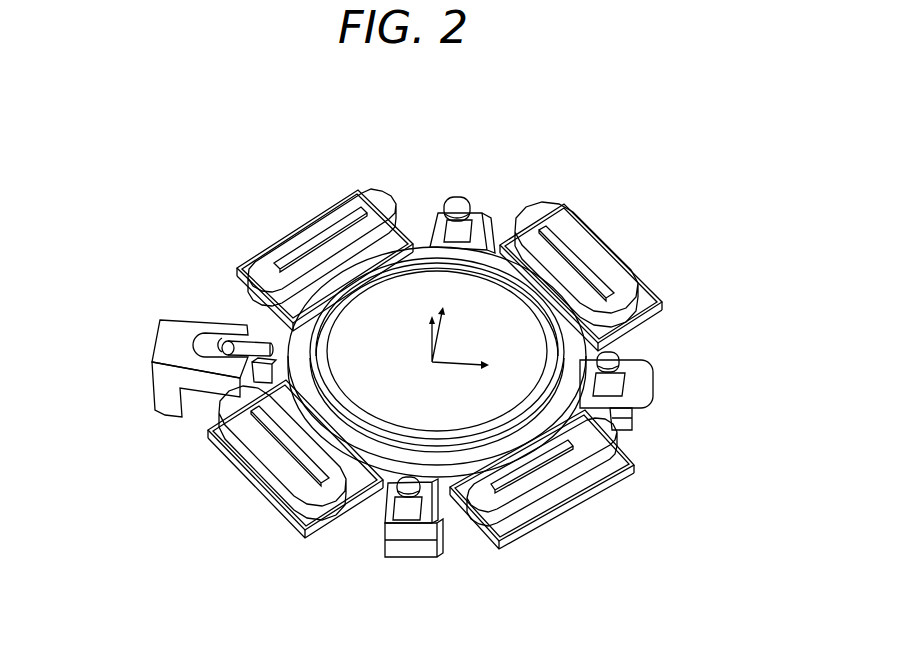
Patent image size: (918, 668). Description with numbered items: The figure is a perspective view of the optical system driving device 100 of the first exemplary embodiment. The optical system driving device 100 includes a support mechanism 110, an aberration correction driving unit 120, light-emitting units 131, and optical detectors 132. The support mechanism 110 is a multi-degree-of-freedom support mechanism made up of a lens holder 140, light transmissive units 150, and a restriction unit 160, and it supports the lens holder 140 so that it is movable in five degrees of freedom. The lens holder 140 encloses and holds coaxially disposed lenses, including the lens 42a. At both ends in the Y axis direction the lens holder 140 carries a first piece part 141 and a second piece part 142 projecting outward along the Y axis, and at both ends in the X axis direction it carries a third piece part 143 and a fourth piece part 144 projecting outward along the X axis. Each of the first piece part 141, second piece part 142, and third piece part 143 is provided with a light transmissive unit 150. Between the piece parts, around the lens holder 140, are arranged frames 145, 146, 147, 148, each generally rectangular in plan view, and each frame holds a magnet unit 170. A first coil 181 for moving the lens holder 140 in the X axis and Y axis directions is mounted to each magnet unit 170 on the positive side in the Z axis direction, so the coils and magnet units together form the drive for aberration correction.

The optical system driving device 100 is at (427, 100).
The support mechanism 110 is at (522, 165).
The lens 42a is at (400, 283).
The lens holder 140 is at (427, 252).
The first piece part 141 is at (433, 215).
The second piece part 142 is at (393, 537).
The third piece part 143 is at (648, 372).
The fourth piece part 144 is at (230, 334).
The frame 145 is at (560, 225).
The frame 146 is at (632, 468).
The frame 147 is at (293, 530).
The frame 148 is at (240, 265).
The light transmissive unit 150 is at (478, 218).
The light-emitting unit 131 is at (457, 205).
The optical detector 132 is at (628, 422).
The restriction unit 160 is at (152, 318).
The magnet unit 170 is at (655, 293).
The first coil 181 is at (316, 230).
The aberration correction driving unit 120 is at (282, 222).